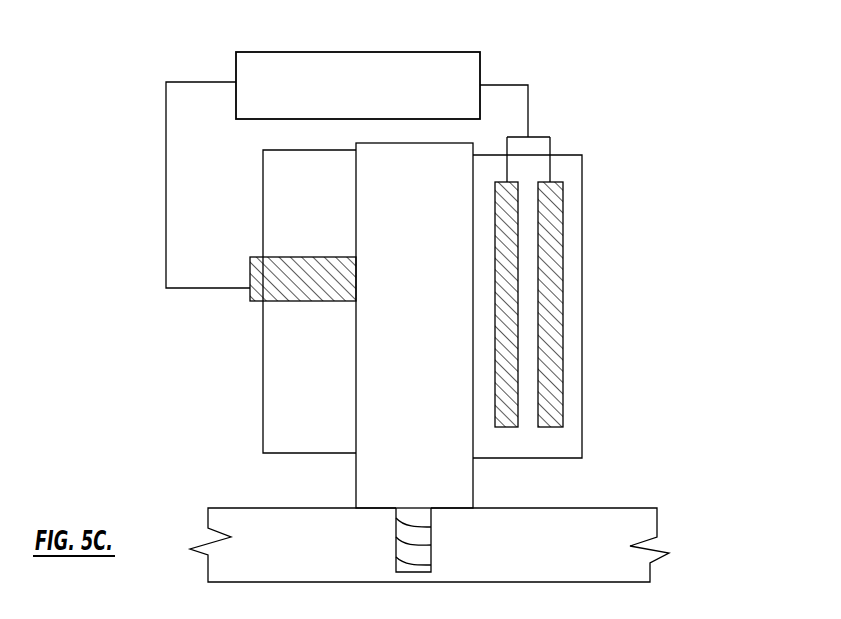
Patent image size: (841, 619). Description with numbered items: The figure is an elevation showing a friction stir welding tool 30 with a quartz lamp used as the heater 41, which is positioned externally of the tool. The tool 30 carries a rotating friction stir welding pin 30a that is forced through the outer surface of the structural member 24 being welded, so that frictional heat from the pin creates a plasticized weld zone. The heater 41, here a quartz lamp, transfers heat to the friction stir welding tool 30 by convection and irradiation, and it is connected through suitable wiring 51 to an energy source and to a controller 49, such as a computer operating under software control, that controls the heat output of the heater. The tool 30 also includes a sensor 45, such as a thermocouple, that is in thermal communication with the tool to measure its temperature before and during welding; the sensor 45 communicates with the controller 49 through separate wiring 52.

The structural member 24 is at (622, 515).
The friction stir welding tool 30 is at (458, 478).
The friction stir welding pin 30a is at (431, 548).
The heater 41 is at (573, 245).
The sensor 45 is at (253, 302).
The controller 49 is at (417, 52).
The wiring 51 is at (520, 85).
The wiring 52 is at (166, 178).